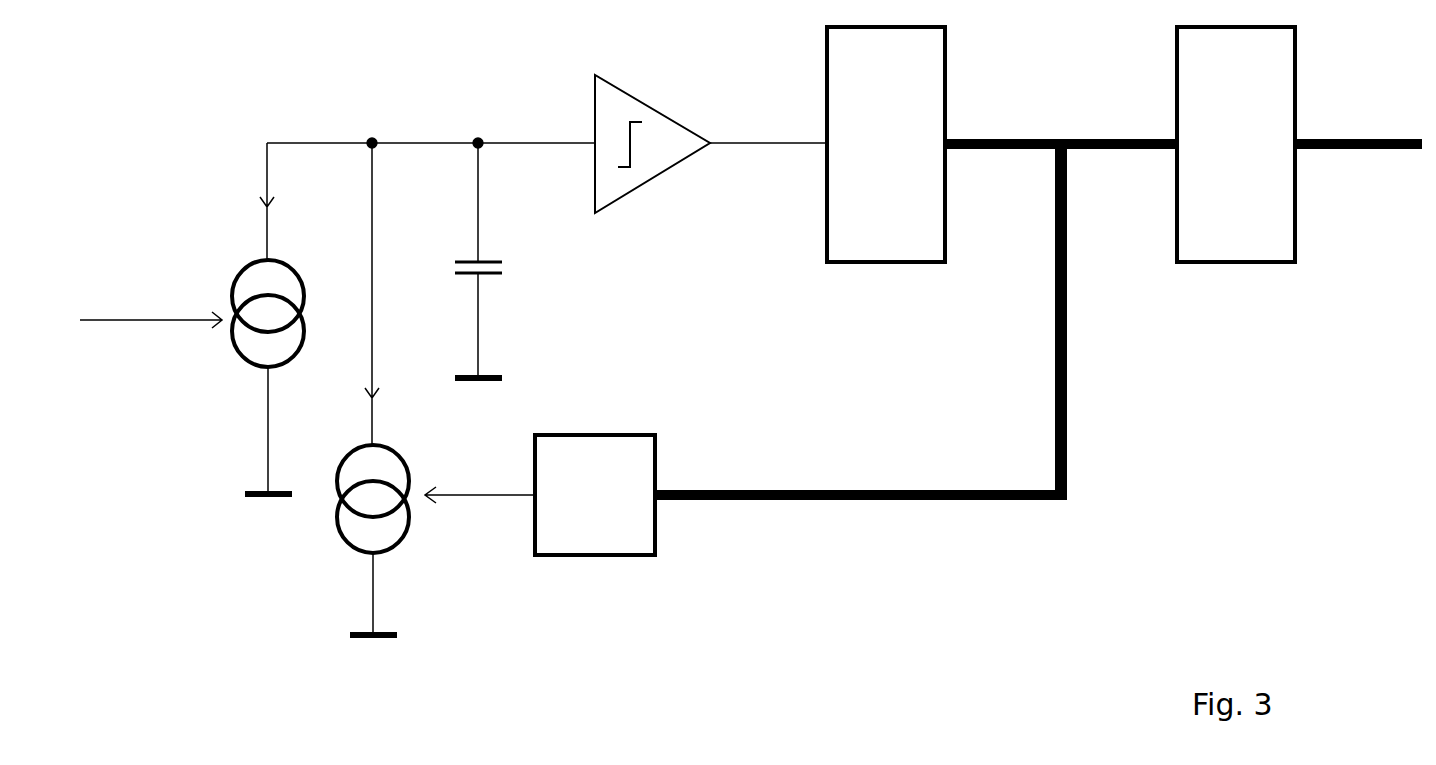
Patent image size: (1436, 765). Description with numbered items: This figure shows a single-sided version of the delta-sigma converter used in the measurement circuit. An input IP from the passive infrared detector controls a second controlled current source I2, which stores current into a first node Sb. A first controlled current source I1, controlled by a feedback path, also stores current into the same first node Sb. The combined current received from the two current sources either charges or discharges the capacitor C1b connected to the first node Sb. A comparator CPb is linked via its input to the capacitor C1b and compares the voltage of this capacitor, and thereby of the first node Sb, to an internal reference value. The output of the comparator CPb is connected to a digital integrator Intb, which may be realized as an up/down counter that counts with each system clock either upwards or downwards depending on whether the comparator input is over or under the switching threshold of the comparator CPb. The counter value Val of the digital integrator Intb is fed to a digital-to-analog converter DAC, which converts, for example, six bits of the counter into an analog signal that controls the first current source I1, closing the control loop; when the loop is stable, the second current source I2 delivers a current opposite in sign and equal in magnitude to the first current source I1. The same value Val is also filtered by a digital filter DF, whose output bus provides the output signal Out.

The first node Sb is at (391, 122).
The input current IP is at (151, 297).
The second controlled current source I2 is at (281, 318).
The first controlled current source I1 is at (375, 389).
The capacitor C1b is at (508, 258).
The comparator CPb is at (652, 127).
The digital integrator Intb is at (886, 144).
The value signal Val is at (916, 329).
The digital filter DF is at (1236, 144).
The output signal Out is at (1358, 169).
The digital-to-analog converter DAC is at (540, 495).